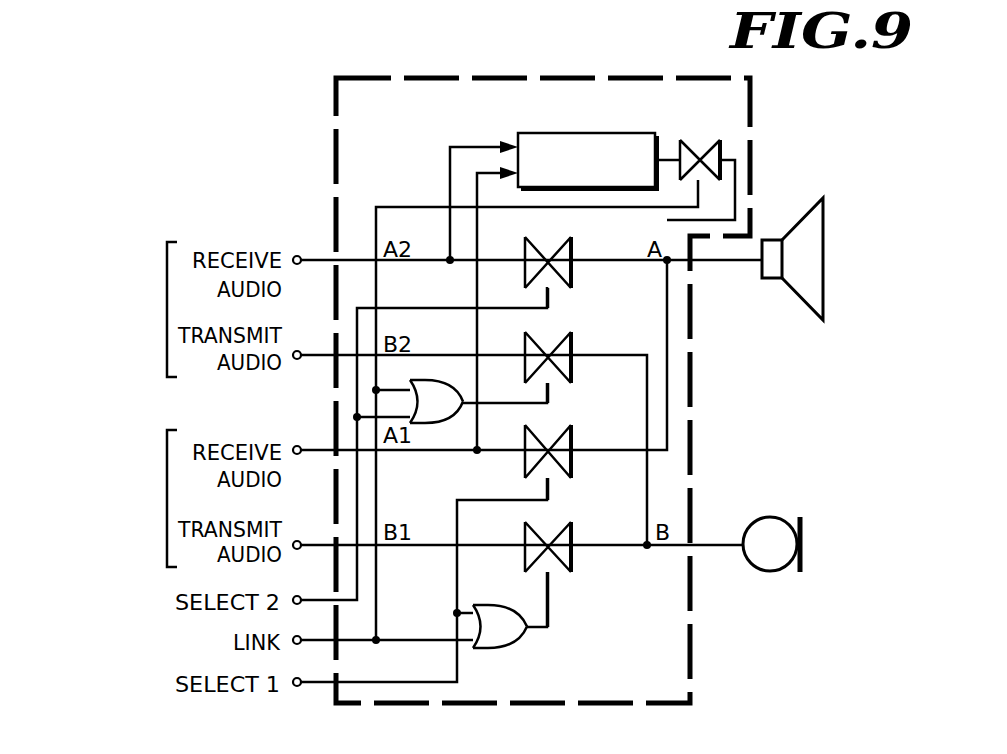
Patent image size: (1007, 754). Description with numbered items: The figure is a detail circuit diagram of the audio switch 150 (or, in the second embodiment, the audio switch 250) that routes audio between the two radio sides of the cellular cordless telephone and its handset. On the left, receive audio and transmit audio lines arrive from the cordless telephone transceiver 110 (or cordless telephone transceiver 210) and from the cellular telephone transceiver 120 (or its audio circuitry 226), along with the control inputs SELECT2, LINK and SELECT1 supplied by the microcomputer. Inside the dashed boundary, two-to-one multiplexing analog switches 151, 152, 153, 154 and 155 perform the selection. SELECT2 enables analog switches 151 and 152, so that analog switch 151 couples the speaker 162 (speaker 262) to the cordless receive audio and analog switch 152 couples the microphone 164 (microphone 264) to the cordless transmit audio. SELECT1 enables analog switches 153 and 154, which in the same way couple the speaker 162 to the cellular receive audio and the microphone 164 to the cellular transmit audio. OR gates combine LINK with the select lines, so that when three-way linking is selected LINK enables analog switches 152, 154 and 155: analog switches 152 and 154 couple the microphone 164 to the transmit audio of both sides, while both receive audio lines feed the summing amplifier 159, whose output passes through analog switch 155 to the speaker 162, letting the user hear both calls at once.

The cordless telephone transceiver 110 is at (112, 264).
The cordless telephone transceiver 210 is at (172, 235).
The cellular telephone transceiver 120 is at (112, 452).
The audio circuitry 226 is at (172, 421).
The audio switch 150 is at (582, 390).
The audio switch 250 is at (690, 375).
The analog switch 151 is at (572, 249).
The analog switch 152 is at (572, 343).
The analog switch 153 is at (572, 437).
The analog switch 154 is at (572, 534).
The analog switch 155 is at (700, 140).
The summing amplifier 159 is at (587, 133).
The speaker 162 is at (848, 256).
The speaker 262 is at (823, 232).
The microphone 164 is at (840, 544).
The microphone 264 is at (805, 545).